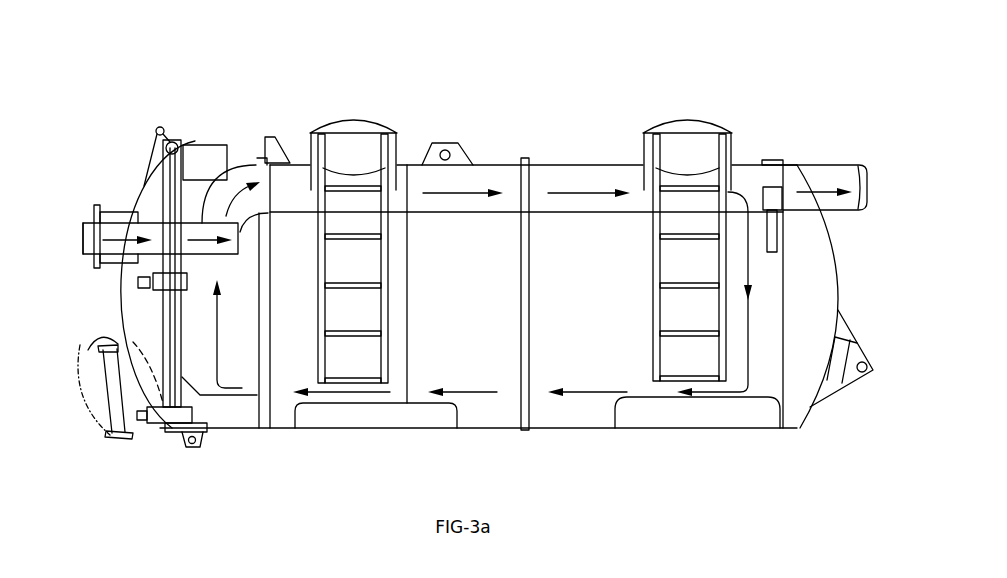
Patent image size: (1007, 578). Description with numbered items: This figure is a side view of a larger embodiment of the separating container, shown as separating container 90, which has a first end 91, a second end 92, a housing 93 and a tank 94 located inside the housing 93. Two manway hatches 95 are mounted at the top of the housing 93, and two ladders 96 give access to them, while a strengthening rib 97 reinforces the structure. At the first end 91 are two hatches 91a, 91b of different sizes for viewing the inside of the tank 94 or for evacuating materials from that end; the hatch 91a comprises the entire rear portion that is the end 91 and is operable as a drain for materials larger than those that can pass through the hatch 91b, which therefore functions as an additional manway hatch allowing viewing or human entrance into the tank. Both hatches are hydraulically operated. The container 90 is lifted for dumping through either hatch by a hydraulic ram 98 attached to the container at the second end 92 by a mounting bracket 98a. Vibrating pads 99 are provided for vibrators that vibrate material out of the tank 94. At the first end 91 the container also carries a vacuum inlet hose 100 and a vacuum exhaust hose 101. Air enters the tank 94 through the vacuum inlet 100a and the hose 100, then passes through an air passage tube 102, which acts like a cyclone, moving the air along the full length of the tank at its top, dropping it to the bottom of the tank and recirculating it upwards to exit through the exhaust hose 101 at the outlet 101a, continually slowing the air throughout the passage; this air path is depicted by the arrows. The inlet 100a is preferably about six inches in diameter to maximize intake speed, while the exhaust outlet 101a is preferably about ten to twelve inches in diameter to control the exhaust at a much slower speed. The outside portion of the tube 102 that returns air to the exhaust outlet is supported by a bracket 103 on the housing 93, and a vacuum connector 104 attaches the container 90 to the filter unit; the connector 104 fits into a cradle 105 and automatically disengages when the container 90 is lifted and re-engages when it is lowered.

The separating container 90 is at (714, 97).
The first end 91 is at (142, 188).
The hatch 91a is at (135, 313).
The hatch 91b is at (108, 408).
The second end 92 is at (827, 227).
The housing 93 is at (292, 428).
The tank 94 is at (285, 410).
The manway hatches 95 is at (373, 120).
The ladders 96 is at (387, 157).
The strengthening rib 97 is at (533, 167).
The hydraulic ram 98 is at (828, 373).
The mounting bracket 98a is at (860, 355).
The vibrating pads 99 is at (417, 417).
The vacuum inlet hose 100 is at (88, 240).
The vacuum inlet 100a is at (85, 227).
The vacuum exhaust hose 101 is at (115, 262).
The exhaust outlet 101a is at (95, 263).
The air passage tube 102 is at (483, 180).
The bracket 103 is at (773, 237).
The vacuum connector 104 is at (833, 177).
The cradle 105 is at (867, 180).